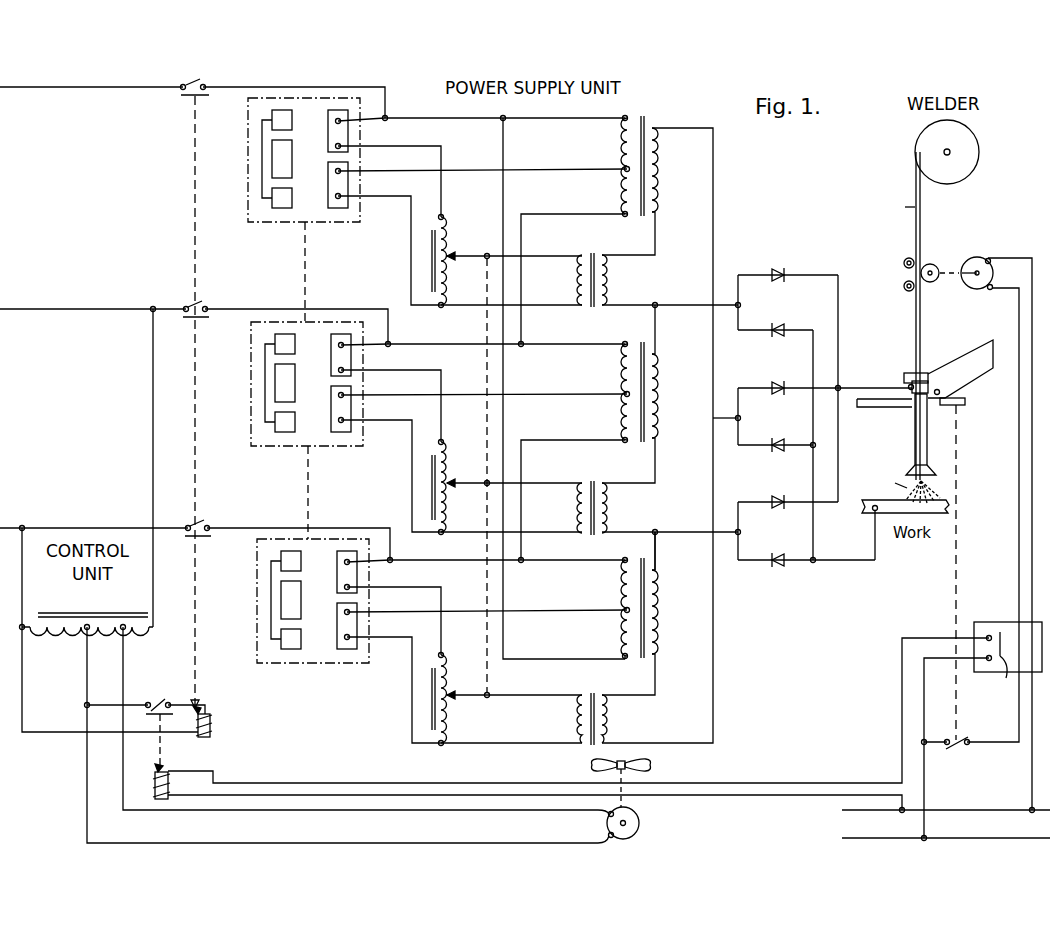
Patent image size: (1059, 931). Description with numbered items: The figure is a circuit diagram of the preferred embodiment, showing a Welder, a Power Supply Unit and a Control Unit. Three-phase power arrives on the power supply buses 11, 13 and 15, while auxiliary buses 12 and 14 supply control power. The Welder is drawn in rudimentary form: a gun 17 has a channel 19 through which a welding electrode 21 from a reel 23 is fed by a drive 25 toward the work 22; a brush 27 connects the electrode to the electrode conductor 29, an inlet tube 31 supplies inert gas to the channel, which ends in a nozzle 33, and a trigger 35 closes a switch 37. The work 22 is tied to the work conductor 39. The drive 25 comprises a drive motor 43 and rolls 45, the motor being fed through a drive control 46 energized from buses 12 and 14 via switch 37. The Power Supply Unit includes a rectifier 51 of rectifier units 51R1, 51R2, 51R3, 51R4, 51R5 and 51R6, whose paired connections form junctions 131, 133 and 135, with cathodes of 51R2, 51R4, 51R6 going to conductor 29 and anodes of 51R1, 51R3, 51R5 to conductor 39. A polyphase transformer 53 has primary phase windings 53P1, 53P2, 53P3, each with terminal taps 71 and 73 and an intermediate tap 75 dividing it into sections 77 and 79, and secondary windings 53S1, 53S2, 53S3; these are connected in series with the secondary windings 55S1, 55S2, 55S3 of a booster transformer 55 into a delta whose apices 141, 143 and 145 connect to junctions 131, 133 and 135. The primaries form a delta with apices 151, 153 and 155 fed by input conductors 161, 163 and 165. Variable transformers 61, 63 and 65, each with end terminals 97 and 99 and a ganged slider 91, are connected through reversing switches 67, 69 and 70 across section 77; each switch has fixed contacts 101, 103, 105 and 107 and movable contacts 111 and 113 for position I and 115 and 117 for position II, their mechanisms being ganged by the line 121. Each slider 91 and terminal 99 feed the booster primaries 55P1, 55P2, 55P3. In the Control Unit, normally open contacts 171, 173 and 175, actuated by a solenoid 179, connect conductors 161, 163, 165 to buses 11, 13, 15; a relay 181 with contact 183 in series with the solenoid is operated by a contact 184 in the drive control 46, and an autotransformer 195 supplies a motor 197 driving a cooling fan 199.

The power supply bus 11 is at (14, 527).
The auxiliary bus 12 is at (977, 808).
The power supply bus 13 is at (14, 311).
The auxiliary bus 14 is at (977, 836).
The power supply bus 15 is at (14, 89).
The gun 17 is at (975, 380).
The channel 19 is at (928, 447).
The welding electrode 21 is at (915, 334).
The work 22 is at (862, 513).
The reel 23 is at (975, 172).
The drive 25 is at (959, 261).
The brush 27 is at (931, 373).
The electrode conductor 29 is at (886, 388).
The inlet tube 31 is at (876, 412).
The nozzle 33 is at (911, 474).
The trigger 35 is at (966, 403).
The switch 37 is at (958, 752).
The work conductor 39 is at (875, 560).
The drive motor 43 is at (978, 290).
The rolls 45 is at (935, 282).
The drive control 46 is at (1004, 622).
The rectifier 51 is at (782, 247).
The rectifier unit 51R1 is at (778, 452).
The rectifier unit 51R2 is at (825, 380).
The rectifier unit 51R3 is at (806, 570).
The rectifier unit 51R4 is at (788, 494).
The rectifier unit 51R5 is at (778, 338).
The rectifier unit 51R6 is at (775, 268).
The polyphase transformer 53 is at (687, 374).
The primary phase winding 53P1 is at (620, 594).
The primary phase winding 53P2 is at (620, 378).
The primary phase winding 53P3 is at (620, 152).
The secondary winding 53S1 is at (668, 616).
The secondary winding 53S2 is at (668, 400).
The secondary winding 53S3 is at (668, 170).
The polyphase booster transformer 55 is at (600, 249).
The booster primary winding 55P1 is at (578, 717).
The booster primary winding 55P2 is at (578, 505).
The booster primary winding 55P3 is at (578, 278).
The booster secondary winding 55S1 is at (608, 719).
The booster secondary winding 55S2 is at (608, 506).
The booster secondary winding 55S3 is at (608, 279).
The variable transformer 61 is at (447, 720).
The variable transformer 63 is at (447, 507).
The variable transformer 65 is at (447, 281).
The reversing switch 67 is at (247, 656).
The reversing switch 69 is at (241, 433).
The reversing switch 70 is at (238, 209).
The terminal tap 71 is at (622, 115).
The terminal tap 73 is at (622, 222).
The intermediate tap 75 is at (625, 171).
The primary winding section 77 is at (621, 132).
The primary winding section 79 is at (621, 200).
The slider 91 is at (449, 253).
The end terminal 97 is at (444, 214).
The end terminal 99 is at (443, 308).
The fixed contact 101 is at (350, 124).
The fixed contact 103 is at (350, 149).
The fixed contact 105 is at (350, 174).
The fixed contact 107 is at (350, 199).
The movable contact 111 is at (329, 133).
The movable contact 113 is at (332, 190).
The movable contact 115 is at (272, 118).
The movable contact 117 is at (276, 163).
The actuating mechanism line 121 is at (305, 279).
The junction 131 is at (740, 418).
The junction 133 is at (740, 532).
The junction 135 is at (740, 305).
The delta apex 141 is at (713, 418).
The delta apex 143 is at (657, 530).
The delta apex 145 is at (657, 303).
The primary delta apex 151 is at (392, 560).
The primary delta apex 153 is at (390, 344).
The primary delta apex 155 is at (387, 118).
The input supply conductor 161 is at (348, 528).
The input supply conductor 163 is at (337, 309).
The input supply conductor 165 is at (386, 96).
The normally open contact 171 is at (194, 526).
The normally open contact 173 is at (189, 307).
The normally open contact 175 is at (184, 95).
The solenoid 179 is at (211, 731).
The relay 181 is at (168, 786).
The normally open contact 183 is at (169, 723).
The contact 184 is at (992, 664).
The autotransformer 195 is at (92, 612).
The motor 197 is at (640, 823).
The cooling fan 199 is at (616, 765).